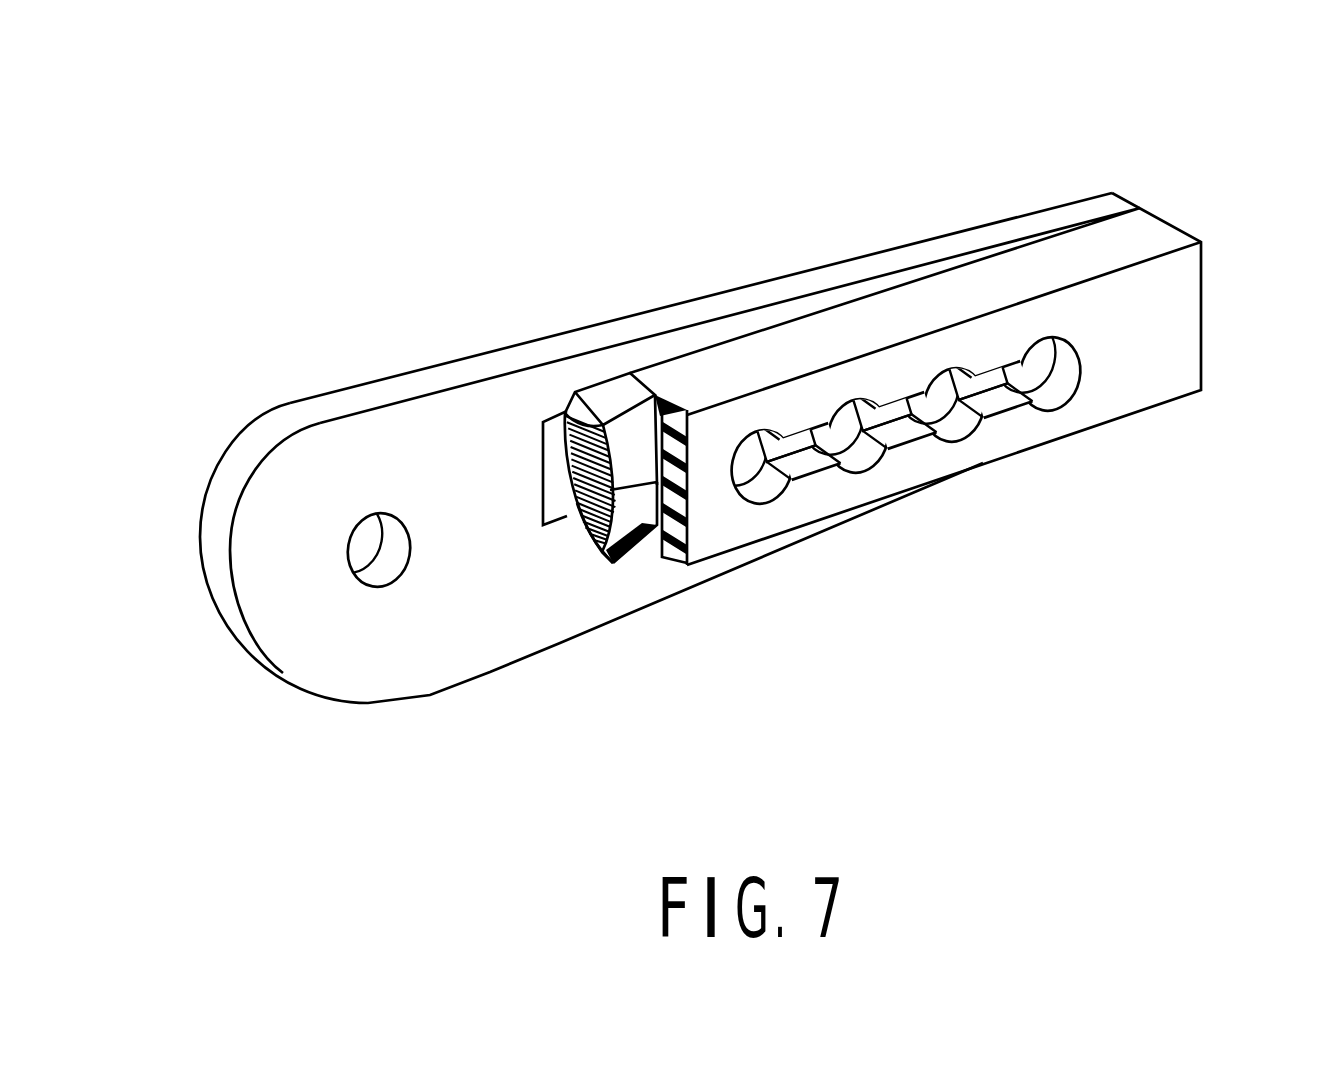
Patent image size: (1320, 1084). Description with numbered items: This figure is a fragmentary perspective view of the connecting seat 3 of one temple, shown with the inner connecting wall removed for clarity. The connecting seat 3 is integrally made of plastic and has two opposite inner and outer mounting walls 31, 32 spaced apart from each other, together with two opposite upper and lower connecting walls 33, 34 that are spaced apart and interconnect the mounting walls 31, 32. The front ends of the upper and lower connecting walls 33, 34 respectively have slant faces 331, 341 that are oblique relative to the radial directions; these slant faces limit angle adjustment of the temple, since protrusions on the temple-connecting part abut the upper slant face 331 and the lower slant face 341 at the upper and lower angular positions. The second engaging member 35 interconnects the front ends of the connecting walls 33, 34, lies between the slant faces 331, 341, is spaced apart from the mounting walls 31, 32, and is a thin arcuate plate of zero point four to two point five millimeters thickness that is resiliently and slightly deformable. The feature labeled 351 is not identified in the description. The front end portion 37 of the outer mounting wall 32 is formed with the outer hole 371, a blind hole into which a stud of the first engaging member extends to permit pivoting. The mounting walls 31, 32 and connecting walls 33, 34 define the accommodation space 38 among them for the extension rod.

The connecting seat 3 is at (946, 176).
The inner mounting wall 31 is at (800, 495).
The outer mounting wall 32 is at (718, 298).
The upper connecting wall 33 is at (622, 422).
The upper slant face 331 is at (577, 407).
The lower connecting wall 34 is at (647, 543).
The lower slant face 341 is at (585, 540).
The second engaging member 35 is at (645, 540).
The spacer rim 351 is at (583, 482).
The front end portion of the outer mounting wall 37 is at (307, 478).
The outer hole 371 is at (377, 540).
The accommodation space 38 is at (633, 463).